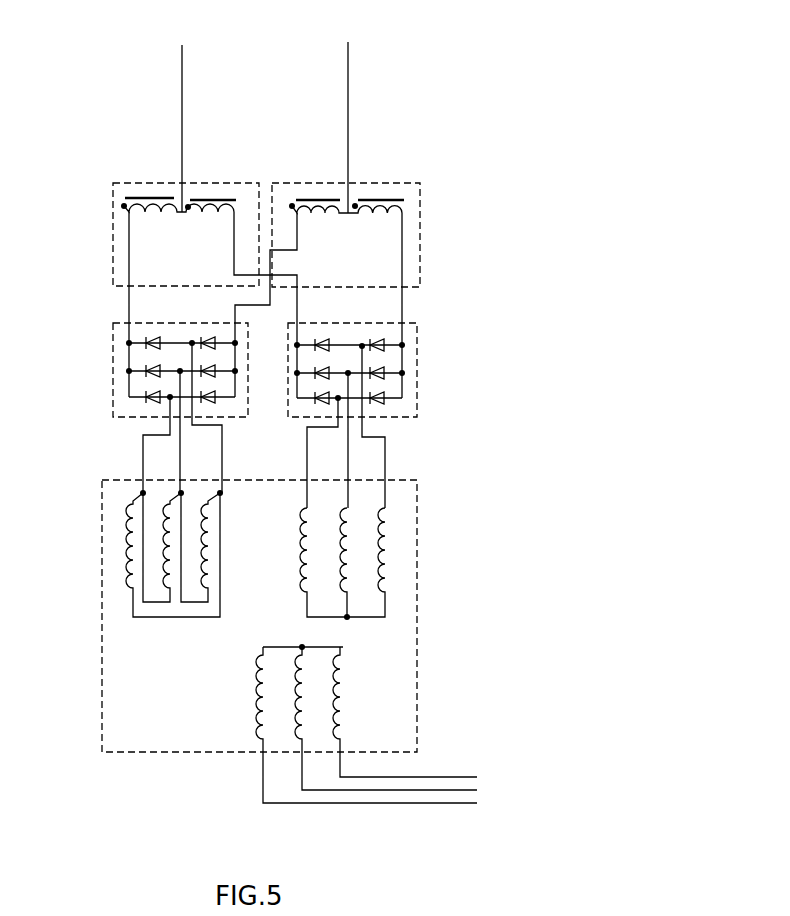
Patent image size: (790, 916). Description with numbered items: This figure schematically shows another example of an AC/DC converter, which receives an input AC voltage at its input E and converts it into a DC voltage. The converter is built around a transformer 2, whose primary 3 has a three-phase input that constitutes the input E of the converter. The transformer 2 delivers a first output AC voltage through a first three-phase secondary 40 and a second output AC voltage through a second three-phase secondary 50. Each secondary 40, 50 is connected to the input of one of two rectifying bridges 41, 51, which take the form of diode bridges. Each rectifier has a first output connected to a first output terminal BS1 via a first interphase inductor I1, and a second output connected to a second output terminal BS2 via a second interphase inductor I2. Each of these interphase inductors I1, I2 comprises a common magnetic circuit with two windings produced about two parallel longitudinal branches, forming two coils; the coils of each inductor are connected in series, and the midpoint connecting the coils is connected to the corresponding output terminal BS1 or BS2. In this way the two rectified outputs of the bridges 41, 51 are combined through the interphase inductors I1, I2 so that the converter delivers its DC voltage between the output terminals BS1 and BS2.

The second output terminal BS2 is at (182, 48).
The first output terminal BS1 is at (348, 45).
The second interphase inductor I2 is at (108, 243).
The first interphase inductor I1 is at (423, 243).
The rectifying bridge 41 is at (115, 376).
The rectifying bridge 51 is at (418, 380).
The first three-phase secondary 40 is at (115, 543).
The second three-phase secondary 50 is at (395, 550).
The transformer 2 is at (249, 616).
The primary 3 is at (250, 690).
The input E is at (248, 763).